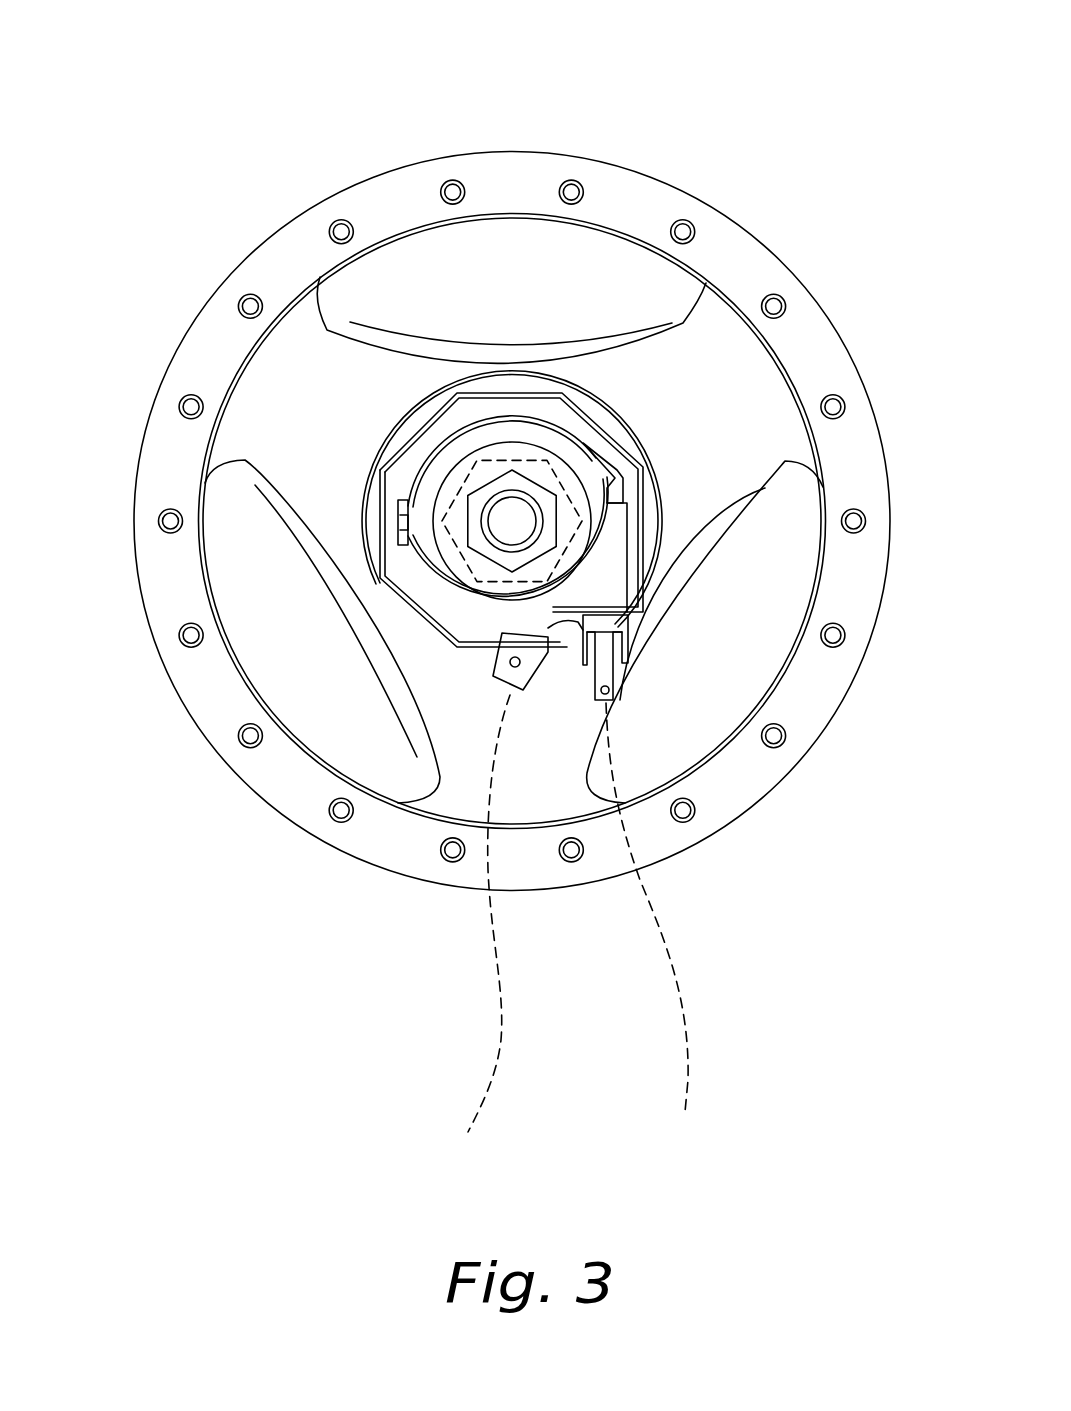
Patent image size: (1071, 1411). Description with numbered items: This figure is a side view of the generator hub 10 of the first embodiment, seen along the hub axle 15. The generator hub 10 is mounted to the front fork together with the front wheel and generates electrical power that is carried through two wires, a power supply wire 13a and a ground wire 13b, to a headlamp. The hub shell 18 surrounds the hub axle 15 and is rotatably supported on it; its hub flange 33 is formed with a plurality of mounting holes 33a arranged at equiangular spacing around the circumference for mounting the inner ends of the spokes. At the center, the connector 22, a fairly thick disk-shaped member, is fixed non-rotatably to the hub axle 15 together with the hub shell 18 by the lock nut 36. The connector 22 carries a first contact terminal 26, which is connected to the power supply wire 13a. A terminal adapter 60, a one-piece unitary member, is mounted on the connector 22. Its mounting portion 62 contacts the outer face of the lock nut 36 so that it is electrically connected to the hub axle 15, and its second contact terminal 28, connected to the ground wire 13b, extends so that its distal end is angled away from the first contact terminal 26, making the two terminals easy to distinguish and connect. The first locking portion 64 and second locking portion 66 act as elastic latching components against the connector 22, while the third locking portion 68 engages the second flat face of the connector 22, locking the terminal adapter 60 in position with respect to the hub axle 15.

The generator hub 10 is at (482, 566).
The power supply wire 13a is at (680, 985).
The ground wire 13b is at (495, 985).
The hub axle 15 is at (508, 505).
The hub shell 18 is at (498, 242).
The connector 22 is at (560, 395).
The first contact terminal 26 is at (613, 677).
The second contact terminal 28 is at (493, 676).
The hub flange 33 is at (642, 192).
The mounting holes 33a is at (686, 231).
The lock nut 36 is at (447, 551).
The terminal adapter 60 is at (405, 523).
The mounting portion 62 is at (437, 448).
The first locking portion 64 is at (635, 540).
The second locking portion 66 is at (400, 505).
The third locking portion 68 is at (608, 457).